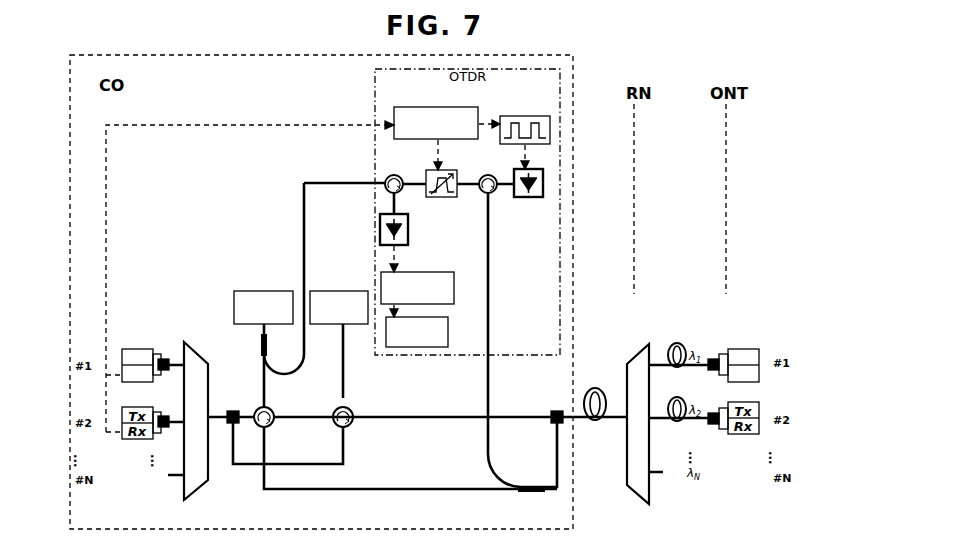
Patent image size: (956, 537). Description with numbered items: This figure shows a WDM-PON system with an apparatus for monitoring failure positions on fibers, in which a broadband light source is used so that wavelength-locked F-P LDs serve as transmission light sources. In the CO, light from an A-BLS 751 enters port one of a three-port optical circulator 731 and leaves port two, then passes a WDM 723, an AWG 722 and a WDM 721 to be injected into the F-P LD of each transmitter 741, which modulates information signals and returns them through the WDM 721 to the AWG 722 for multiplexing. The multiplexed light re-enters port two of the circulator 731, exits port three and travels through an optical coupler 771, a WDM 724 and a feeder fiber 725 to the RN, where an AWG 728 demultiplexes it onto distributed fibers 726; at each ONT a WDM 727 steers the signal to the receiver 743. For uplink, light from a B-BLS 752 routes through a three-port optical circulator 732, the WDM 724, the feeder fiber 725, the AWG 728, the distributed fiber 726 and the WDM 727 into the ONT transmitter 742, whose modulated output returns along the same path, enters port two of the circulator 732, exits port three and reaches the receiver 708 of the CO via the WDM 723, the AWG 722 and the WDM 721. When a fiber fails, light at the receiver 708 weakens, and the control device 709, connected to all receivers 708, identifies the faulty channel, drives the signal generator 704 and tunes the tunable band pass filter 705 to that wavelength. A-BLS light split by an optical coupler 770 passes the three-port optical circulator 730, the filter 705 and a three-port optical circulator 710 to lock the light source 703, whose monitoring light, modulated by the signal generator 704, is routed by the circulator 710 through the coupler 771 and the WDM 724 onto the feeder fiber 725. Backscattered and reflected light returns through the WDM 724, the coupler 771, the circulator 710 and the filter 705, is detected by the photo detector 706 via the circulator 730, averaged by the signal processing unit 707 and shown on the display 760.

The light source 703 is at (539, 197).
The signal generator 704 is at (526, 116).
The tunable band pass filter 705 is at (441, 196).
The photo detector 706 is at (379, 226).
The signal processing unit 707 is at (438, 271).
The receiver 708 is at (138, 381).
The control device 709 is at (420, 106).
The three-port optical circulator 710 is at (494, 192).
The WDM 721 is at (163, 356).
The AWG 722 is at (187, 344).
The WDM 723 is at (231, 408).
The WDM 724 is at (551, 422).
The feeder fiber 725 is at (597, 419).
The distributed fiber 726 is at (664, 360).
The WDM 727 is at (707, 356).
The AWG 728 is at (631, 489).
The three-port optical circulator 730 is at (395, 172).
The three-port optical circulator 731 is at (266, 424).
The three-port optical circulator 732 is at (351, 423).
The transmitter 741 is at (143, 347).
The transmitter 742 is at (737, 347).
The receiver 743 is at (758, 358).
The A-BLS 751 is at (243, 289).
The B-BLS 752 is at (333, 289).
The display 760 is at (445, 331).
The optical coupler 770 is at (258, 349).
The optical coupler 771 is at (521, 491).